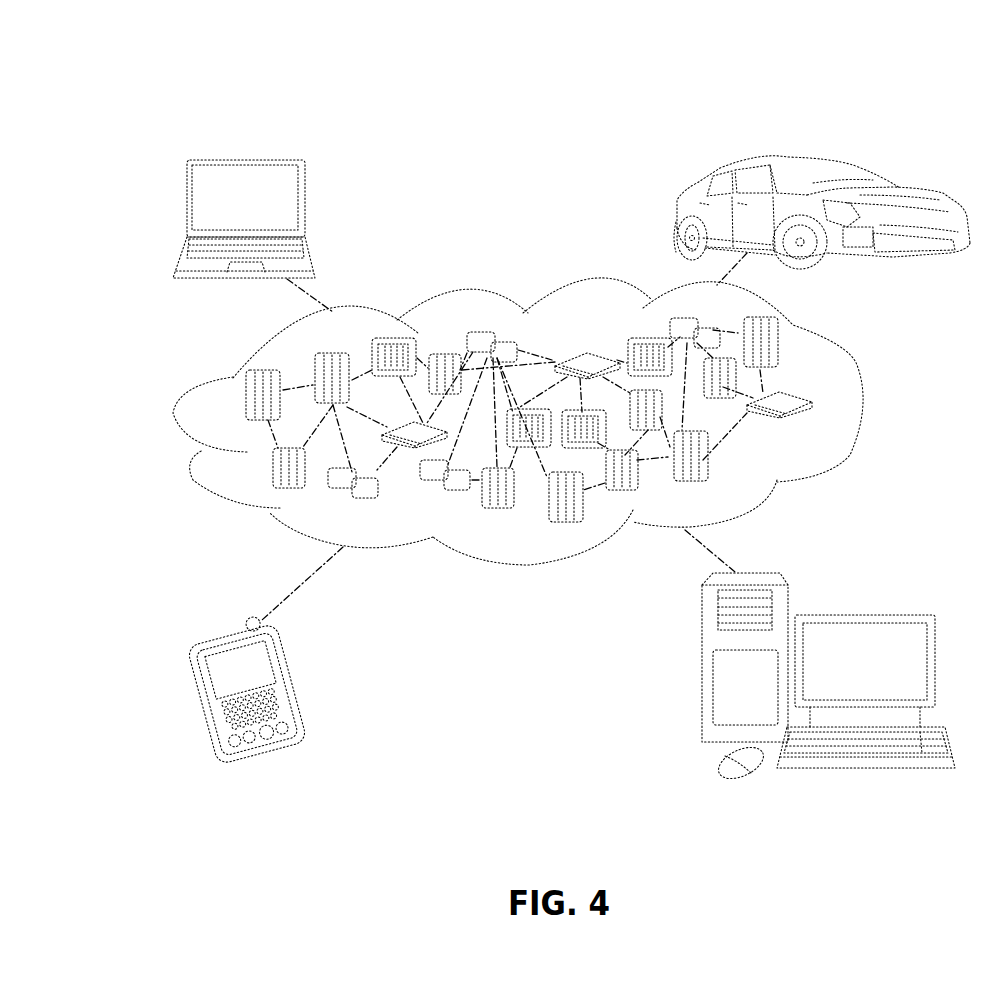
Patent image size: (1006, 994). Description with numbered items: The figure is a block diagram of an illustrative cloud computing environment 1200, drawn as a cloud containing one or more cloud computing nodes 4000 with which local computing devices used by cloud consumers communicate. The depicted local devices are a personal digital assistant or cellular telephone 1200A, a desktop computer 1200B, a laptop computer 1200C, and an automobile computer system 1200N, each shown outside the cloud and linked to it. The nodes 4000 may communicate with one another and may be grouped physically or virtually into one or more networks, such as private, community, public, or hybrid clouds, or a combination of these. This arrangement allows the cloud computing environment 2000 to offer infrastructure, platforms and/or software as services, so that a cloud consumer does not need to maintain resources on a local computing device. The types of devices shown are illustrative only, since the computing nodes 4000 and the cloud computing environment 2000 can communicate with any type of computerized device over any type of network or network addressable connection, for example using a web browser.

The cloud computing environment 1200 is at (118, 72).
The personal digital assistant or cellular telephone 1200A is at (297, 683).
The desktop computer 1200B is at (862, 613).
The laptop computer 1200C is at (308, 204).
The automobile computer system 1200N is at (674, 216).
The cloud computing environment 2000 is at (862, 402).
The cloud computing nodes 4000 is at (813, 427).